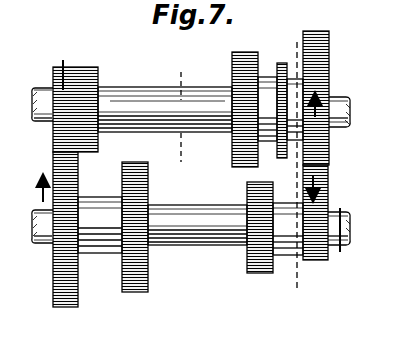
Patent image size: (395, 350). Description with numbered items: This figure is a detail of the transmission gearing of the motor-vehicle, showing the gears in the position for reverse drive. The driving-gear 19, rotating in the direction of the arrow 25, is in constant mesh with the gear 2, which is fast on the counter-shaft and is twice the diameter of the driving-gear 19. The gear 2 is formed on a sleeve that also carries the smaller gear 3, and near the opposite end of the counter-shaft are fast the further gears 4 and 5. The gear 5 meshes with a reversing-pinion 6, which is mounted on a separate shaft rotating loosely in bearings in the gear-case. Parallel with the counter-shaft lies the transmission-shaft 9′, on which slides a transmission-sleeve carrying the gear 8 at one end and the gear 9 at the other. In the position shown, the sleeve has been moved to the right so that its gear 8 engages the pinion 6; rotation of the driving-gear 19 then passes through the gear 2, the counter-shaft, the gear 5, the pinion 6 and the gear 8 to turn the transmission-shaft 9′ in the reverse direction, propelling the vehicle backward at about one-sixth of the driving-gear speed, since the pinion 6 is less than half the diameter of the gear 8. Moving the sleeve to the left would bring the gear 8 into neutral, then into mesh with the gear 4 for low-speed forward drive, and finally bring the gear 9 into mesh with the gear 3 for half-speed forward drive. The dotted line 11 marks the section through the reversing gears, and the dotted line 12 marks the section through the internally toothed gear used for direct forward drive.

The gear 2 is at (52, 277).
The gear 3 is at (148, 279).
The gear 4 is at (248, 262).
The gear 5 is at (310, 260).
The reversing-pinion 6 is at (328, 205).
The gear 8 is at (329, 50).
The gear 9 is at (245, 57).
The transmission-shaft 9′ is at (126, 96).
The dotted line 11 11 is at (287, 164).
The dotted line 12 12 is at (180, 119).
The driving-gear 19 is at (80, 68).
The arrow 25 is at (62, 67).